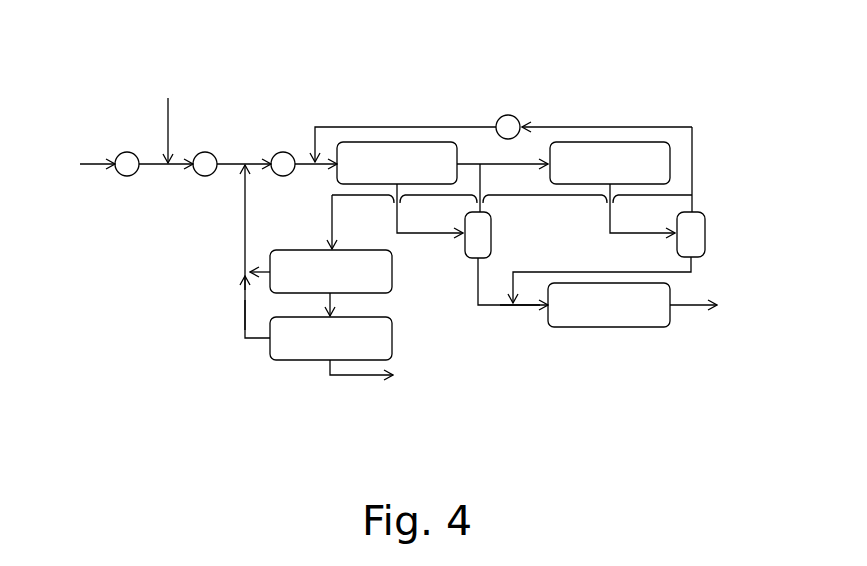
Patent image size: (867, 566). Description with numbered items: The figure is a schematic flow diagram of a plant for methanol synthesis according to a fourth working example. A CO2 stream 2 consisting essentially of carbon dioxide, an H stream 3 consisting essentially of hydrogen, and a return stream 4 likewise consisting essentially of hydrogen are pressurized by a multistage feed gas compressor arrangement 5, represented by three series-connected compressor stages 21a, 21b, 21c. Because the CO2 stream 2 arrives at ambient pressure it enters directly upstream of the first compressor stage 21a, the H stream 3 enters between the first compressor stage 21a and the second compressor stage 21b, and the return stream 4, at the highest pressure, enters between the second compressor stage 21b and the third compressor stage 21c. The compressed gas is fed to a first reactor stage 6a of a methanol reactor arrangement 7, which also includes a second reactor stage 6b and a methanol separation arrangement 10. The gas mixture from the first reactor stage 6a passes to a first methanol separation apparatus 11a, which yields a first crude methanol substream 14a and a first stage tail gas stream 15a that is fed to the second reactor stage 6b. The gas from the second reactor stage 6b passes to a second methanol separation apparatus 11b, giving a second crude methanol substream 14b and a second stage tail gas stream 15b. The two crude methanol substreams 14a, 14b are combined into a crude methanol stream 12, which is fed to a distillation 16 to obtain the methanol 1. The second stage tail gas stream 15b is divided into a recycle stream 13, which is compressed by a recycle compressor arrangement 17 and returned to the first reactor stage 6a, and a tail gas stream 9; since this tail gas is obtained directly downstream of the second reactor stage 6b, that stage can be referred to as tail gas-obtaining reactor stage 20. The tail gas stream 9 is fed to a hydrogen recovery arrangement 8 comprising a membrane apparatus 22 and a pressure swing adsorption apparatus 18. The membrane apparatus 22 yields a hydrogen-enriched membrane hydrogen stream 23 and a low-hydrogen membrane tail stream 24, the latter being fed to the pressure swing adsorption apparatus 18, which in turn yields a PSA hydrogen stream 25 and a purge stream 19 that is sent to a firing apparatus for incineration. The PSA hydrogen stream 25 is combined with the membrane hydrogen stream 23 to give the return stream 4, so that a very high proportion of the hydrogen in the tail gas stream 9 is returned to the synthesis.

The methanol 1 is at (690, 308).
The CO2 stream 2 is at (92, 162).
The H stream 3 is at (167, 128).
The return stream 4 is at (245, 218).
The feed gas compressor arrangement 5 is at (203, 131).
The first reactor stage 6a is at (397, 163).
The second reactor stage 6b is at (610, 163).
The methanol reactor arrangement 7 is at (512, 117).
The hydrogen recovery arrangement 8 is at (362, 325).
The tail gas stream 9 is at (330, 231).
The methanol separation arrangement 10 is at (607, 221).
The first methanol separation apparatus 11a is at (493, 244).
The second methanol separation apparatus 11b is at (706, 244).
The crude methanol stream 12 is at (527, 307).
The recycle stream 13 is at (648, 127).
The first crude methanol substream 14a is at (491, 310).
The second crude methanol substream 14b is at (692, 271).
The first stage tail gas stream 15a is at (480, 160).
The second stage tail gas stream 15b is at (694, 205).
The distillation 16 is at (609, 305).
The recycle compressor arrangement 17 is at (520, 117).
The pressure swing adsorption apparatus 18 is at (407, 338).
The purge stream 19 is at (380, 378).
The tail gas-obtaining reactor stage 20 is at (610, 163).
The first compressor stage 21a is at (121, 177).
The second compressor stage 21b is at (201, 177).
The third compressor stage 21c is at (281, 151).
The membrane apparatus 22 is at (331, 271).
The membrane hydrogen stream 23 is at (258, 270).
The membrane tail stream 24 is at (338, 302).
The PSA hydrogen stream 25 is at (240, 303).